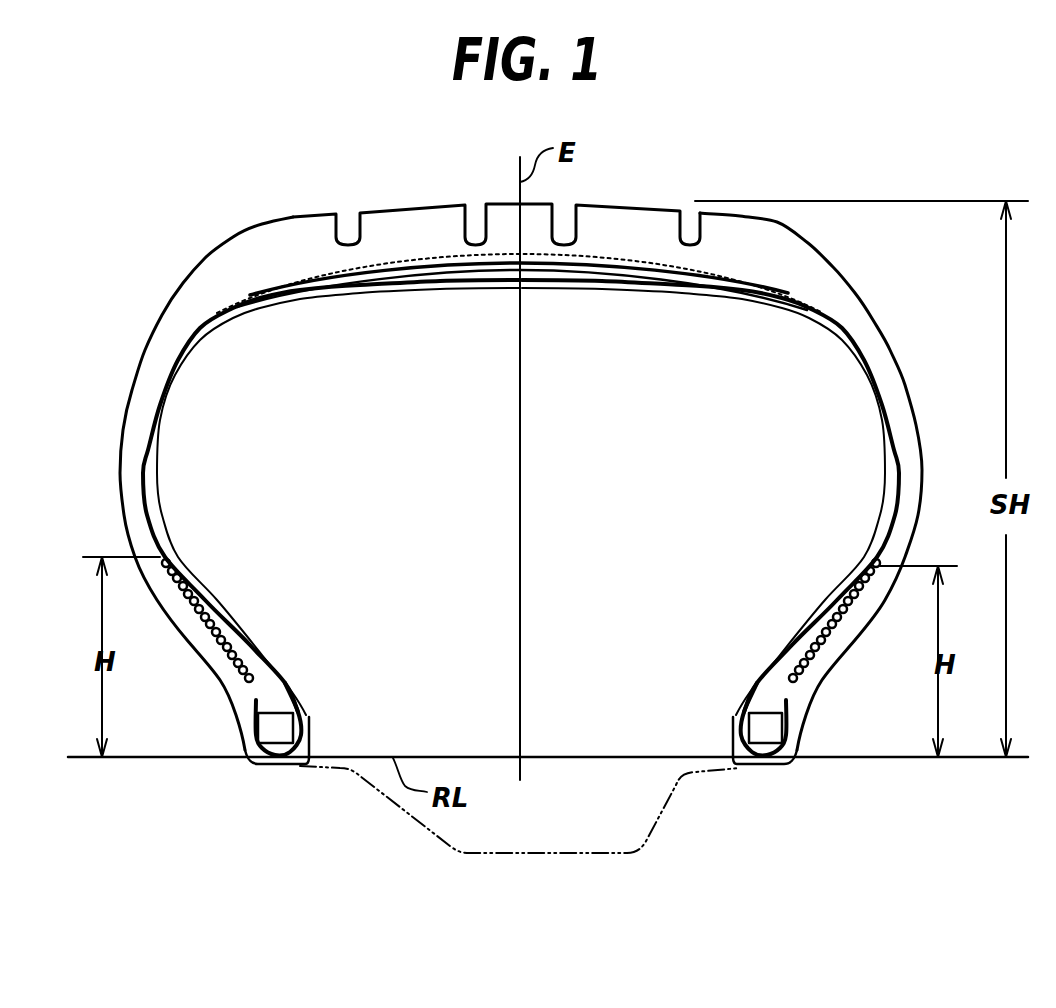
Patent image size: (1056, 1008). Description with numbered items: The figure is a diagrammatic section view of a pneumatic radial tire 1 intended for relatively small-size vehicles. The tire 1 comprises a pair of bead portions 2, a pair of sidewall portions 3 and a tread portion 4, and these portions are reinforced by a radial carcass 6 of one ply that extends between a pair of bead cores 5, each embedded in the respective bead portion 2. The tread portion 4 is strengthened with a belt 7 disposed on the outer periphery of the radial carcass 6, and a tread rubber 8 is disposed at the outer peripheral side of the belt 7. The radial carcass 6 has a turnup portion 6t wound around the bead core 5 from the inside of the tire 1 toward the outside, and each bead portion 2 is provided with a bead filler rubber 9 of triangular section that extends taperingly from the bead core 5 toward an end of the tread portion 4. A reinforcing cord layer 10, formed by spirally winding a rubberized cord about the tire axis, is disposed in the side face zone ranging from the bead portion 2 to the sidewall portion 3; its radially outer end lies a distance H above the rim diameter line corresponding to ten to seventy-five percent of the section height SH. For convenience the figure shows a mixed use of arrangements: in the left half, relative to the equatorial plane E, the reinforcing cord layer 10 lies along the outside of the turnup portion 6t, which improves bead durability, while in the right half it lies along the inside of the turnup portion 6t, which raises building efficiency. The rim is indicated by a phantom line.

The tire 1 is at (610, 180).
The bead portion 2 is at (217, 709).
The sidewall portion 3 is at (108, 483).
The tread portion 4 is at (443, 193).
The bead core 5 is at (270, 732).
The radial carcass 6 is at (145, 495).
The turnup portion 6t is at (257, 697).
The belt 7 is at (392, 240).
The tread rubber 8 is at (298, 204).
The bead filler rubber 9 is at (267, 680).
The reinforcing cord layer 10 is at (192, 602).